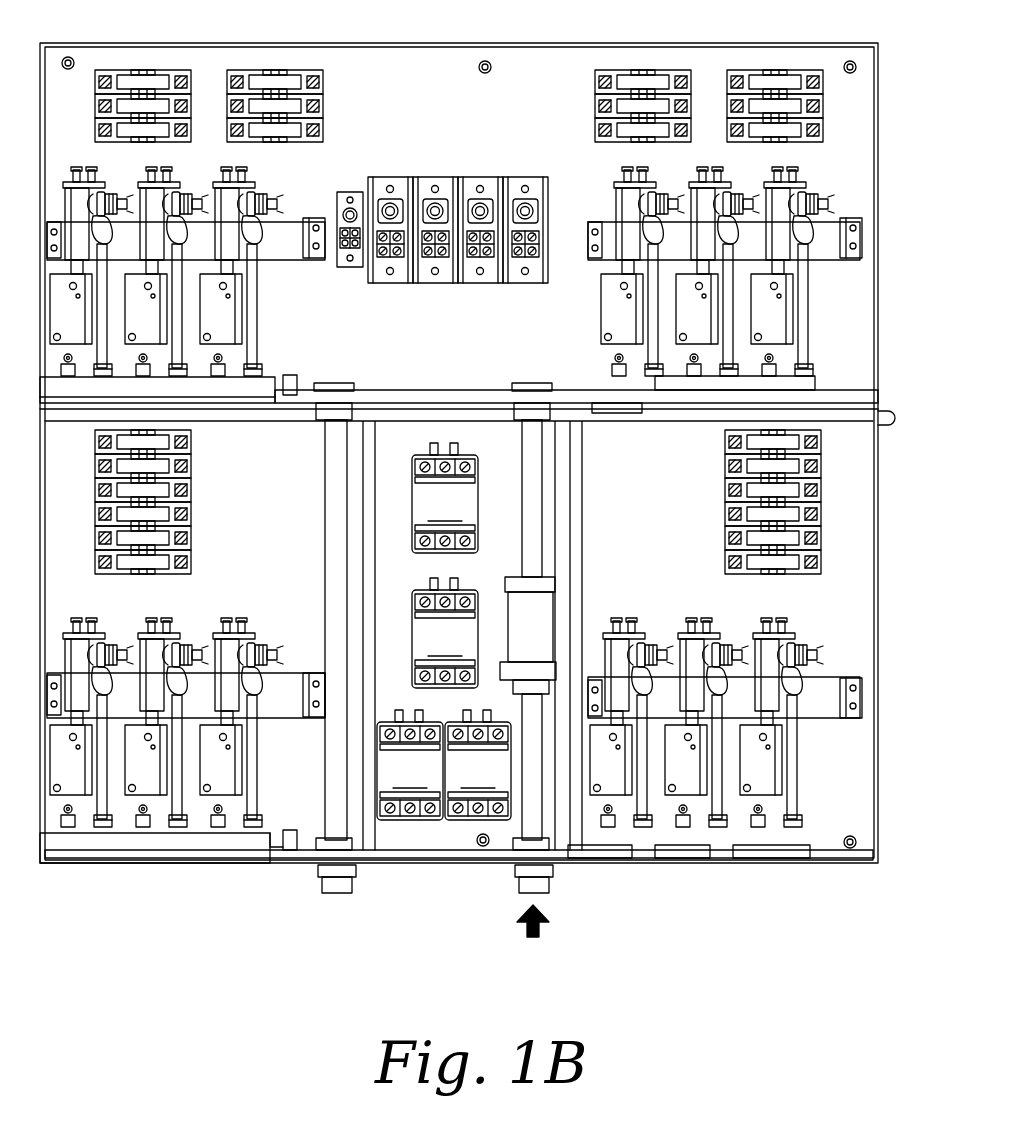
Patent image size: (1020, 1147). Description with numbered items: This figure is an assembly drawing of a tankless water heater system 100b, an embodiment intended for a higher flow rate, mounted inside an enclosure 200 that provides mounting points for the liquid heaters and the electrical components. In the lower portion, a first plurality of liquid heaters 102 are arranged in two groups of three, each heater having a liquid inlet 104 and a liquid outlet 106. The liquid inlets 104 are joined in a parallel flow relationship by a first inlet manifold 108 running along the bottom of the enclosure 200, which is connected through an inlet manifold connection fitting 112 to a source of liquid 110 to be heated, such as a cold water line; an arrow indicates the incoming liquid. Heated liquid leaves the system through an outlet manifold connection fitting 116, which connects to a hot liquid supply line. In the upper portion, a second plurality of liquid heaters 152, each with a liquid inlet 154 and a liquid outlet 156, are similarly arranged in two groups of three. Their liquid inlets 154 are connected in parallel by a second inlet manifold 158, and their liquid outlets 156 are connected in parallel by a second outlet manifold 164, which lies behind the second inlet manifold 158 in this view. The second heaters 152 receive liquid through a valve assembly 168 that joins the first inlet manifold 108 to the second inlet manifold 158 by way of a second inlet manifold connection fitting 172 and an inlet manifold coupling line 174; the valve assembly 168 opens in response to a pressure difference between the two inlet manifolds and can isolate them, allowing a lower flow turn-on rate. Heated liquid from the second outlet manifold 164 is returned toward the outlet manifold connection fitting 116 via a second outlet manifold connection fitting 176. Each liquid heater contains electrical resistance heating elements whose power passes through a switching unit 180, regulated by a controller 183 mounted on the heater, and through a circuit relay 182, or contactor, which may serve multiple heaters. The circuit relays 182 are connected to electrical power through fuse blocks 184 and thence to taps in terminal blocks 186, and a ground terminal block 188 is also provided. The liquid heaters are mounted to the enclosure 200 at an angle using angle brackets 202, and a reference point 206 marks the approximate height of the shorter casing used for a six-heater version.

The tankless water heater system 100b is at (303, 977).
The liquid heaters 102 is at (100, 625).
The liquid inlet 104 is at (258, 832).
The liquid outlet 106 is at (217, 818).
The first inlet manifold 108 is at (455, 852).
The source of liquid 110 is at (535, 936).
The inlet manifold connection fitting 112 is at (535, 887).
The outlet manifold connection fitting 116 is at (330, 892).
The second plurality of liquid heaters 152 is at (100, 178).
The liquid inlet 154 is at (254, 378).
The liquid outlet 156 is at (248, 368).
The second inlet manifold 158 is at (405, 392).
The second outlet manifold 164 is at (308, 380).
The valve assembly 168 is at (548, 637).
The second inlet manifold connection fitting 172 is at (533, 385).
The inlet manifold coupling line 174 is at (523, 510).
The second outlet manifold connection fitting 176 is at (340, 388).
The switching unit 180 is at (250, 238).
The circuit relay 182 is at (444, 631).
The controller 183 is at (225, 328).
The fuse blocks 184 is at (253, 70).
The terminal blocks 186 is at (490, 177).
The ground terminal block 188 is at (349, 270).
The enclosure 200 is at (880, 853).
The angle brackets 202 is at (300, 235).
The reference point 206 is at (880, 418).